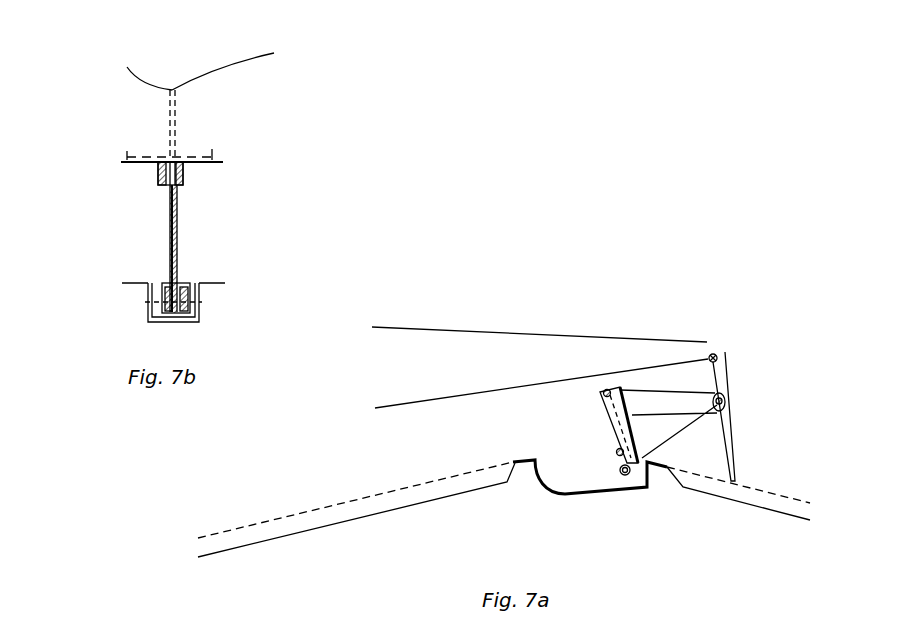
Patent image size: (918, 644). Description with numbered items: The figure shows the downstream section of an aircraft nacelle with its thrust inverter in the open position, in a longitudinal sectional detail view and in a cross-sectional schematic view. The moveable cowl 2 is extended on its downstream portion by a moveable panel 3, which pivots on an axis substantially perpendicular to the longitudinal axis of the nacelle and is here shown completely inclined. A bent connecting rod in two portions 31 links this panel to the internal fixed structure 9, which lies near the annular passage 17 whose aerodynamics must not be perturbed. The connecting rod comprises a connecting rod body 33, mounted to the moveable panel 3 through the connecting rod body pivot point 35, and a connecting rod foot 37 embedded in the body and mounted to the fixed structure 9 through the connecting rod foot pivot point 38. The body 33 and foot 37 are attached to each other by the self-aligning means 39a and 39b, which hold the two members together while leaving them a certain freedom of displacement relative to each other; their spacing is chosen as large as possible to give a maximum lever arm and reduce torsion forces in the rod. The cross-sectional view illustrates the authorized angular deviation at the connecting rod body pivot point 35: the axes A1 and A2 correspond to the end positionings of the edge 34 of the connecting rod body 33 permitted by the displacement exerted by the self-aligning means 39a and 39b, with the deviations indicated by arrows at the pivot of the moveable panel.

In FIG. 7A, the moveable cowl 2 is at (578, 331).
In FIG. 7B, the moveable panel 3 is at (148, 153).
In FIG. 7A, the moveable panel 3 is at (730, 373).
In FIG. 7B, the internal fixed structure 9 is at (138, 295).
In FIG. 7A, the internal fixed structure 9 is at (430, 493).
In FIG. 7A, the annular passage 17 is at (330, 473).
In FIG. 7B, the bent connecting rod in two portions 31 is at (138, 206).
In FIG. 7A, the bent connecting rod in two portions 31 is at (663, 382).
In FIG. 7B, the connecting rod body 33 is at (169, 226).
In FIG. 7A, the connecting rod body 33 is at (688, 390).
In FIG. 7B, the edge 34 is at (181, 256).
In FIG. 7B, the connecting rod body pivot point 35 is at (184, 171).
In FIG. 7A, the connecting rod body pivot point 35 is at (727, 398).
In FIG. 7A, the connecting rod foot 37 is at (603, 462).
In FIG. 7A, the connecting rod foot pivot point 38 is at (627, 477).
In FIG. 7B, the self-aligning means 39a is at (200, 303).
In FIG. 7A, the self-aligning means 39a is at (602, 396).
In FIG. 7B, the self-aligning means 39b is at (250, 302).
In FIG. 7A, the self-aligning means 39b is at (612, 443).
In FIG. 7B, the axis A1 is at (134, 66).
In FIG. 7B, the axis A2 is at (240, 61).